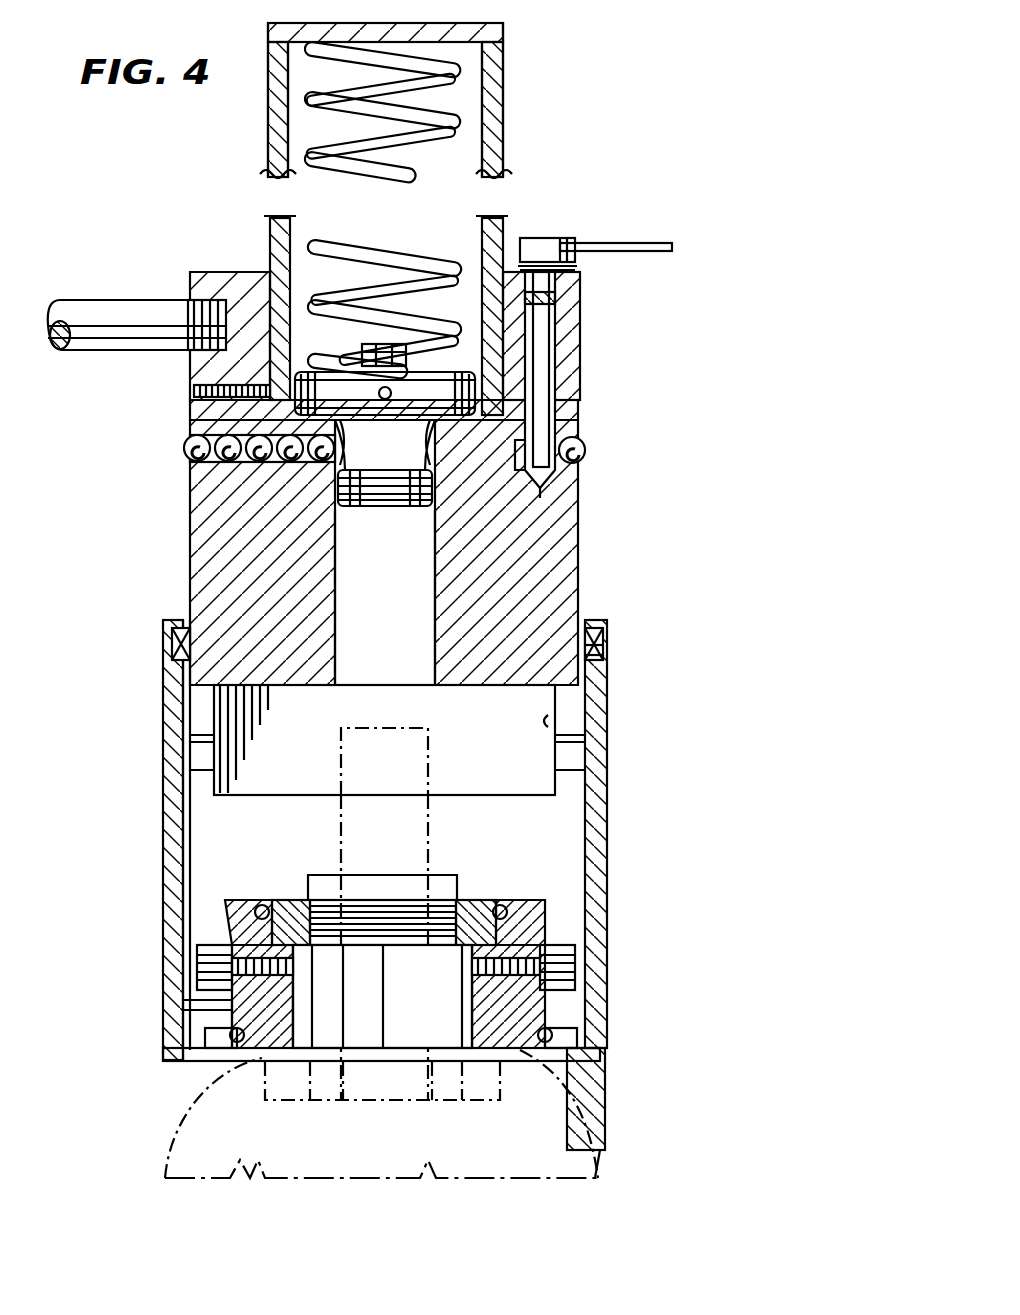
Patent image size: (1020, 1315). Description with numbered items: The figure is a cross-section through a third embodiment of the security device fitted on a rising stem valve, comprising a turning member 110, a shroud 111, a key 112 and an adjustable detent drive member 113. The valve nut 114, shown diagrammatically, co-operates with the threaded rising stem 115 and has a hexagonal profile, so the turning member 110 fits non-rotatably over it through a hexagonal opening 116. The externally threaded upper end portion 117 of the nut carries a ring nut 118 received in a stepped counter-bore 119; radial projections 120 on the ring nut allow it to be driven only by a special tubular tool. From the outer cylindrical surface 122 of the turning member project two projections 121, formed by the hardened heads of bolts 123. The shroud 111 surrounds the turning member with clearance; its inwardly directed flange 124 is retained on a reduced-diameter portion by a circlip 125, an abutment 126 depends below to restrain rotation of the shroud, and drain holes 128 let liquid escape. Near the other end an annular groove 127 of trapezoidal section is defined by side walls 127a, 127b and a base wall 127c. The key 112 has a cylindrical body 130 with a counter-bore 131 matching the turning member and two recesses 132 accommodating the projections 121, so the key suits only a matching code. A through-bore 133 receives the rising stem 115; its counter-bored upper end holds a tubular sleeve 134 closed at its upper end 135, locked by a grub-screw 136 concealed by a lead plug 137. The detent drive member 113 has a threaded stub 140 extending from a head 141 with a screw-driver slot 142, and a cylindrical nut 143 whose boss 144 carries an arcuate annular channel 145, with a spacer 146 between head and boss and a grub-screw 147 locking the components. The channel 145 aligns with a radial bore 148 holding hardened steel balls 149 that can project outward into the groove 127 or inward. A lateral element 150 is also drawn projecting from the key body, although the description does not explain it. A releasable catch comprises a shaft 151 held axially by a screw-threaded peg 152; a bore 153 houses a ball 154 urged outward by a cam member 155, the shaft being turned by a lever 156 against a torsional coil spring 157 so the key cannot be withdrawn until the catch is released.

The turning member 110 is at (563, 912).
The shroud 111 is at (609, 811).
The key 112 is at (586, 557).
The adjustable detent drive member 113 is at (541, 350).
The nut 114 is at (266, 1100).
The rising stem 115 is at (439, 822).
The hexagonal opening 116 is at (548, 995).
The upper end portion 117 is at (456, 893).
The ring nut 118 is at (303, 900).
The stepped counter-bore 119 is at (262, 904).
The radial projections 120 is at (271, 906).
The projections 121 is at (210, 967).
The outer cylindrical surface 122 is at (232, 934).
The bolts 123 is at (232, 944).
The flange 124 is at (206, 1042).
The circlip 125 is at (546, 1047).
The abutment 126 is at (601, 1113).
The annular groove 127 is at (179, 638).
The side wall 127a is at (592, 628).
The side wall 127b is at (601, 654).
The base wall 127c is at (601, 644).
The drain holes 128 is at (168, 1040).
The cylindrical body 130 is at (202, 604).
The counter-bore 131 is at (550, 721).
The recesses 132 is at (194, 777).
The through-bore 133 is at (399, 638).
The tubular sleeve 134 is at (494, 100).
The upper end 135 is at (466, 10).
The grub-screw 136 is at (206, 388).
The lead plug 137 is at (198, 392).
The threaded stub 140 is at (483, 374).
The head 141 is at (338, 501).
The screw-driver slot 142 is at (384, 345).
The cylindrical nut 143 is at (292, 402).
The boss 144 is at (552, 424).
The annular channel 145 is at (427, 506).
The spacer 146 is at (338, 489).
The grub-screw 147 is at (381, 390).
The radial bore 148 is at (306, 458).
The hardened steel balls 149 is at (188, 449).
The tube 150 is at (121, 300).
The shaft 151 is at (541, 382).
The screw-threaded peg 152 is at (560, 295).
The bore 153 is at (560, 436).
The ball 154 is at (588, 454).
The cam member 155 is at (546, 486).
The lever 156 is at (654, 243).
The torsional coil spring 157 is at (519, 237).